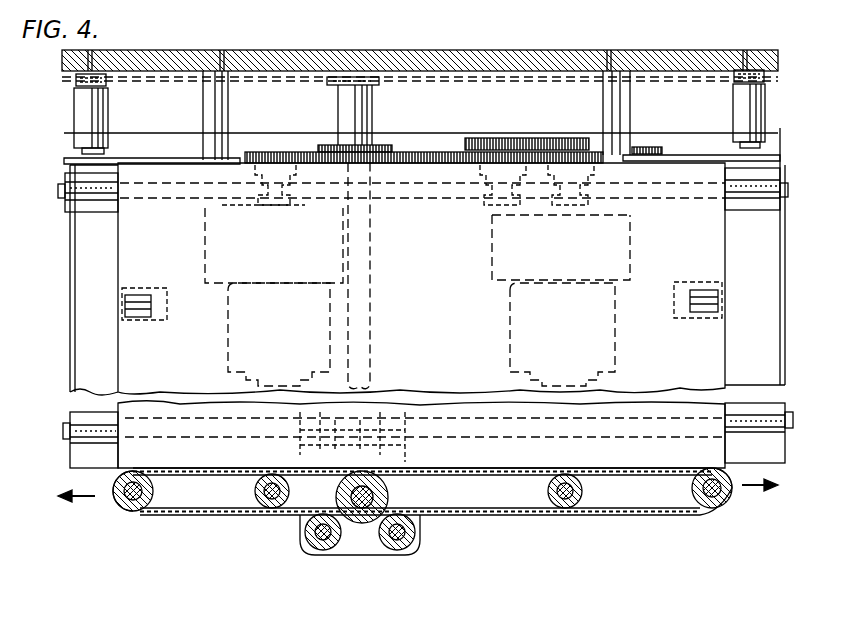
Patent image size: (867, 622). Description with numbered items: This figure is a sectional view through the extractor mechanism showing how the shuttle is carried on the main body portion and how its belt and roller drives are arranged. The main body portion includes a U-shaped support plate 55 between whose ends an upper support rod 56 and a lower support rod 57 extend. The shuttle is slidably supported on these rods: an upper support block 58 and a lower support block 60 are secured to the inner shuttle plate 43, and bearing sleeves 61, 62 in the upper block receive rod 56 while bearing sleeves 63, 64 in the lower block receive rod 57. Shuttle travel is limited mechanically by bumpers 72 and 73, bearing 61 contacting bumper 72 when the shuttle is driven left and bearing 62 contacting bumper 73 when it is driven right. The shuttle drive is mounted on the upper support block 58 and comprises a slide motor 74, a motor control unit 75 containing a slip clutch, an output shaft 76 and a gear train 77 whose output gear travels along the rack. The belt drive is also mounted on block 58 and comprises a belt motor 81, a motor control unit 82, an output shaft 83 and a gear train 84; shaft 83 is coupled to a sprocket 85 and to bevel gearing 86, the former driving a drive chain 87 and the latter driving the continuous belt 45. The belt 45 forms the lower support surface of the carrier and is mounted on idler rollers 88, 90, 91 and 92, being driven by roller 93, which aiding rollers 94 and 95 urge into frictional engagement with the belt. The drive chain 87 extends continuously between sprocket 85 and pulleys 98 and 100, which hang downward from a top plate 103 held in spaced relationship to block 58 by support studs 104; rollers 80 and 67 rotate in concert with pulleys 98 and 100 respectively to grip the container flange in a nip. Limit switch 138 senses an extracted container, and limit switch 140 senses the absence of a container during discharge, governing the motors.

The top plate 103 is at (290, 50).
The sprocket 85 is at (362, 77).
The drive chain 87 is at (464, 77).
The pulley 98 is at (76, 82).
The roller 80 is at (74, 112).
The support studs 104 is at (204, 118).
The gear train 84 is at (262, 152).
The gear train 77 is at (553, 138).
The pulley 100 is at (766, 72).
The roller 67 is at (768, 106).
The bumper 72 is at (66, 178).
The upper support rod 56 is at (104, 200).
The bearing sleeve 61 is at (205, 206).
The output shaft 83 is at (248, 212).
The inner shuttle plate 43 is at (173, 272).
The motor control unit 82 is at (296, 262).
The belt motor 81 is at (285, 338).
The upper support block 58 is at (452, 208).
The output shaft 76 is at (532, 212).
The motor control unit 75 is at (591, 262).
The slide motor 74 is at (575, 338).
The bearing sleeve 62 is at (628, 198).
The bumper 73 is at (778, 196).
The U-shaped support plate 55 is at (70, 352).
The limit switch 140 is at (146, 330).
The limit switch 138 is at (705, 323).
The lower support rod 57 is at (92, 432).
The bearing sleeve 63 is at (300, 420).
The bearing sleeve 64 is at (438, 425).
The lower support block 60 is at (420, 460).
The bevel gearing 86 is at (384, 478).
The continuous belt 45 is at (656, 458).
The idler roller 88 is at (150, 508).
The idler roller 90 is at (268, 508).
The aiding roller 94 is at (312, 540).
The drive roller 93 is at (370, 522).
The aiding roller 95 is at (414, 540).
The idler roller 91 is at (578, 505).
The idler roller 92 is at (722, 500).